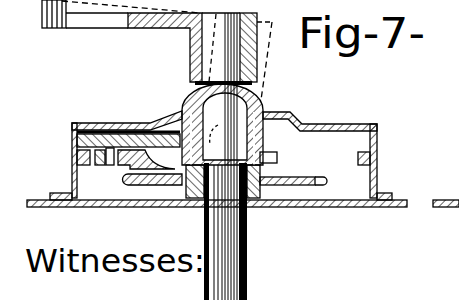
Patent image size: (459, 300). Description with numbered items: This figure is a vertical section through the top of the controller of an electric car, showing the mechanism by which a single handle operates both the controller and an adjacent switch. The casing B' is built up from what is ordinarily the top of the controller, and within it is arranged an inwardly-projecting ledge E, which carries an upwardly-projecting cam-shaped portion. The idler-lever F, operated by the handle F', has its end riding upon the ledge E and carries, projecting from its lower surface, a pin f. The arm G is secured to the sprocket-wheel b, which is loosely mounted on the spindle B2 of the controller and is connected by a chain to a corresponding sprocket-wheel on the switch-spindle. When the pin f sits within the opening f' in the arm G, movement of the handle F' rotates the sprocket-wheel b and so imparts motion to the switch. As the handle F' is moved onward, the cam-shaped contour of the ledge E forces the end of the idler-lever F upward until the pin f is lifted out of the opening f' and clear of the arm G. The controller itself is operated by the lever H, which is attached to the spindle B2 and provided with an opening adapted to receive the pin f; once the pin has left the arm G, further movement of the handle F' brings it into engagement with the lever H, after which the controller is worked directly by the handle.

The handle F' is at (122, 41).
The idler-lever F is at (108, 137).
The opening f' is at (91, 168).
The pin f is at (107, 171).
The arm G is at (150, 167).
The lever H is at (273, 151).
The sprocket-wheel b is at (318, 176).
The ledge E is at (361, 167).
The casing B' is at (243, 145).
The spindle B2 is at (243, 299).